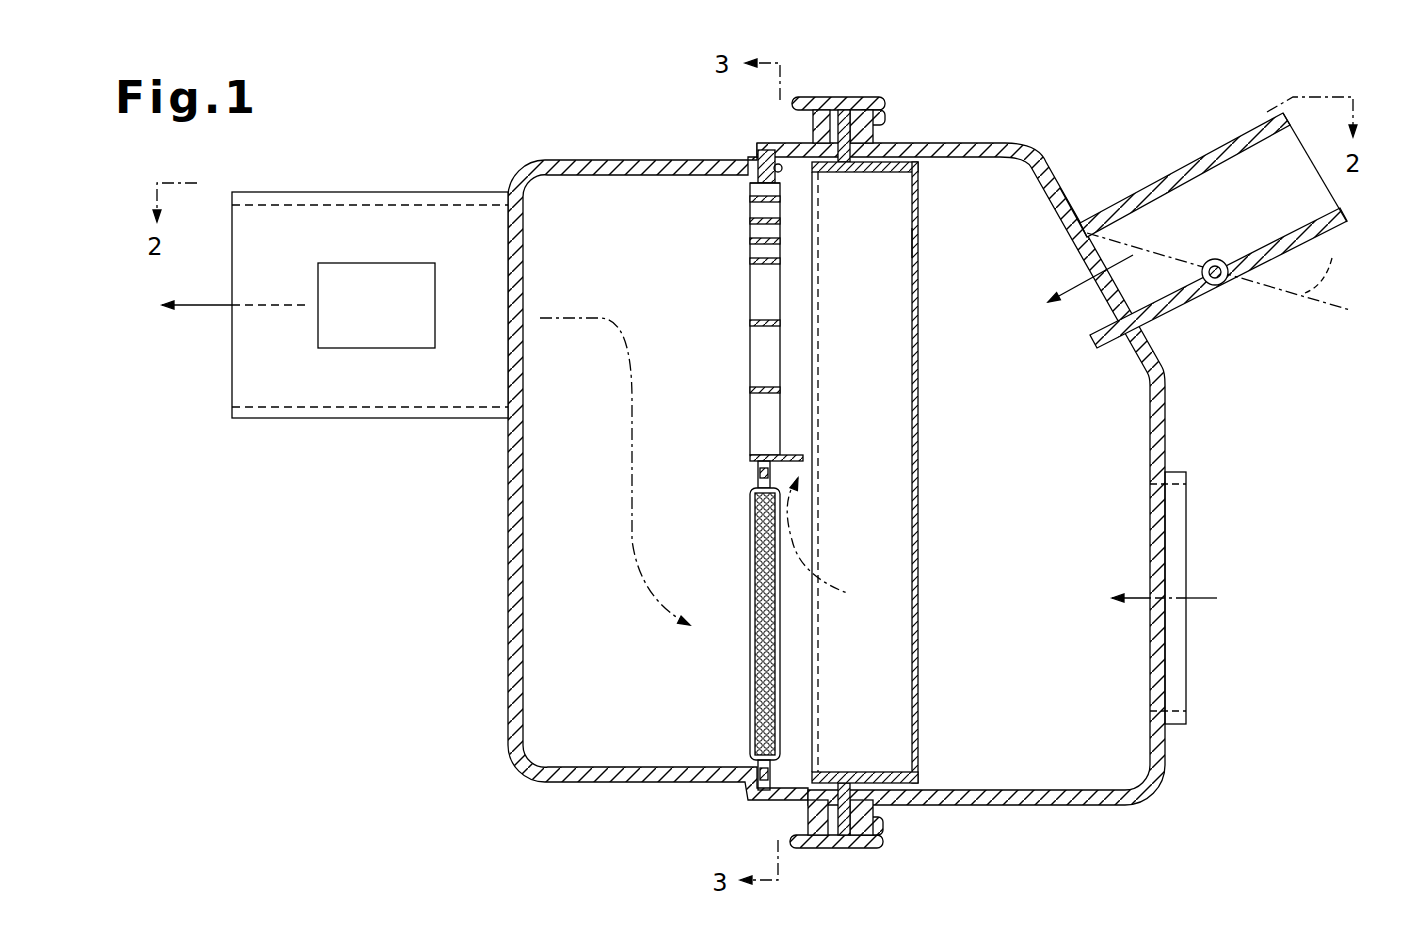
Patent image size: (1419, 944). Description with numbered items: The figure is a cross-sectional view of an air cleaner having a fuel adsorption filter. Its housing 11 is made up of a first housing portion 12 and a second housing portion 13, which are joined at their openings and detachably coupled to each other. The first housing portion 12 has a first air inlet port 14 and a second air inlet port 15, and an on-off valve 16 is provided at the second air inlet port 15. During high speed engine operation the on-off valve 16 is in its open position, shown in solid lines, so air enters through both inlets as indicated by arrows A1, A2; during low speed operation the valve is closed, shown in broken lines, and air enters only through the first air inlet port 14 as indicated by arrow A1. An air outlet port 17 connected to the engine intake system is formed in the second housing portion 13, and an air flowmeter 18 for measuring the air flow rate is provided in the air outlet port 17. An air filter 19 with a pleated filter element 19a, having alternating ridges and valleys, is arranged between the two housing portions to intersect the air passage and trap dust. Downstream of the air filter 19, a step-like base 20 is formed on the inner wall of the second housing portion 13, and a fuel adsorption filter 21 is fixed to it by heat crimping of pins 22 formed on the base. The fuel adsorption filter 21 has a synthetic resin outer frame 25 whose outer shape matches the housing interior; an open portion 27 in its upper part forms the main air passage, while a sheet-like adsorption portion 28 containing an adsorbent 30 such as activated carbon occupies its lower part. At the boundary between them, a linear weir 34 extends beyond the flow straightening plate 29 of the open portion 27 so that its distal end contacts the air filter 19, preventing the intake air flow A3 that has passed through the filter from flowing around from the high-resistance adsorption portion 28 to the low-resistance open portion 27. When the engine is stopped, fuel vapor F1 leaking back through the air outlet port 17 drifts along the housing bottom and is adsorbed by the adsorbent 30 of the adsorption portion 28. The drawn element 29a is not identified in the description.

The housing 11 is at (836, 466).
The first housing portion 12 is at (990, 143).
The second housing portion 13 is at (662, 165).
The first air inlet port 14 is at (1176, 486).
The second air inlet port 15 is at (1190, 180).
The on-off valve 16 is at (1332, 255).
The air outlet port 17 is at (357, 205).
The air flowmeter 18 is at (383, 273).
The air filter 19 is at (920, 187).
The pleated filter element 19a is at (920, 243).
The step-like base 20 is at (760, 157).
The fuel adsorption filter 21 is at (725, 624).
The pins 22 is at (773, 800).
The outer frame 25 is at (750, 186).
The open portion 27 is at (728, 318).
The adsorption portion 28 is at (750, 560).
The flow straightening plate 29 is at (750, 323).
The partition plate 29a is at (750, 241).
The adsorbent 30 is at (750, 655).
The weir 34 is at (803, 457).
The air flow through first air inlet port A1 is at (1138, 590).
The air flow through second air inlet port A2 is at (1073, 282).
The intake air flow A3 is at (822, 573).
The fuel vapor F1 is at (632, 512).